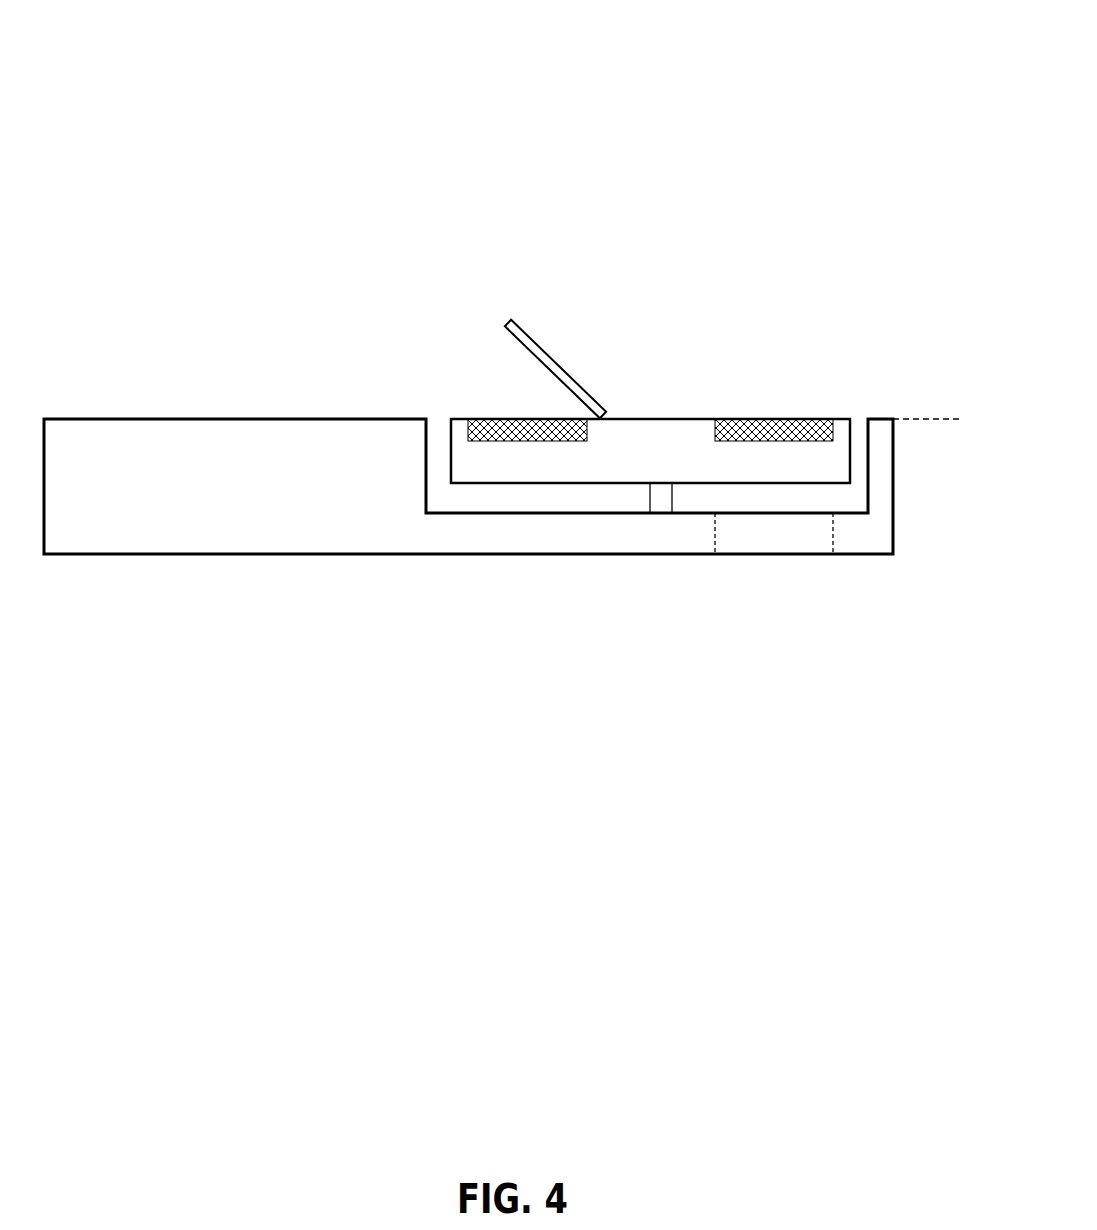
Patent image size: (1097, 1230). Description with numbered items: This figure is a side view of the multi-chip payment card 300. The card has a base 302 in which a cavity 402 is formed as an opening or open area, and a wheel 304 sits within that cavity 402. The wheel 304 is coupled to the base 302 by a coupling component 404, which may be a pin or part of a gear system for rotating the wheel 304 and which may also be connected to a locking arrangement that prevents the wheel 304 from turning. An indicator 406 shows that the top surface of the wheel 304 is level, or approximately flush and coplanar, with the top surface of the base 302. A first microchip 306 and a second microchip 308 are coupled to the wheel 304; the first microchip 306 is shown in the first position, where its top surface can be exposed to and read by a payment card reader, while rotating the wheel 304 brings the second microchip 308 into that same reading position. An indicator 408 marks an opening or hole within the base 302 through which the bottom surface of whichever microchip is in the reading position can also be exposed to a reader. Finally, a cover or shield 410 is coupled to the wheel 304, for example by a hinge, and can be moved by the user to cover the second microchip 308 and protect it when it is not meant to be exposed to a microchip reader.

The multi-chip payment card 300 is at (892, 28).
The base 302 is at (202, 540).
The wheel 304 is at (662, 430).
The first microchip 306 is at (813, 428).
The second microchip 308 is at (517, 427).
The cavity 402 is at (436, 434).
The coupling component 404 is at (662, 503).
The indicator 406 is at (947, 421).
The indicator 408 is at (714, 540).
The shield 410 is at (543, 350).